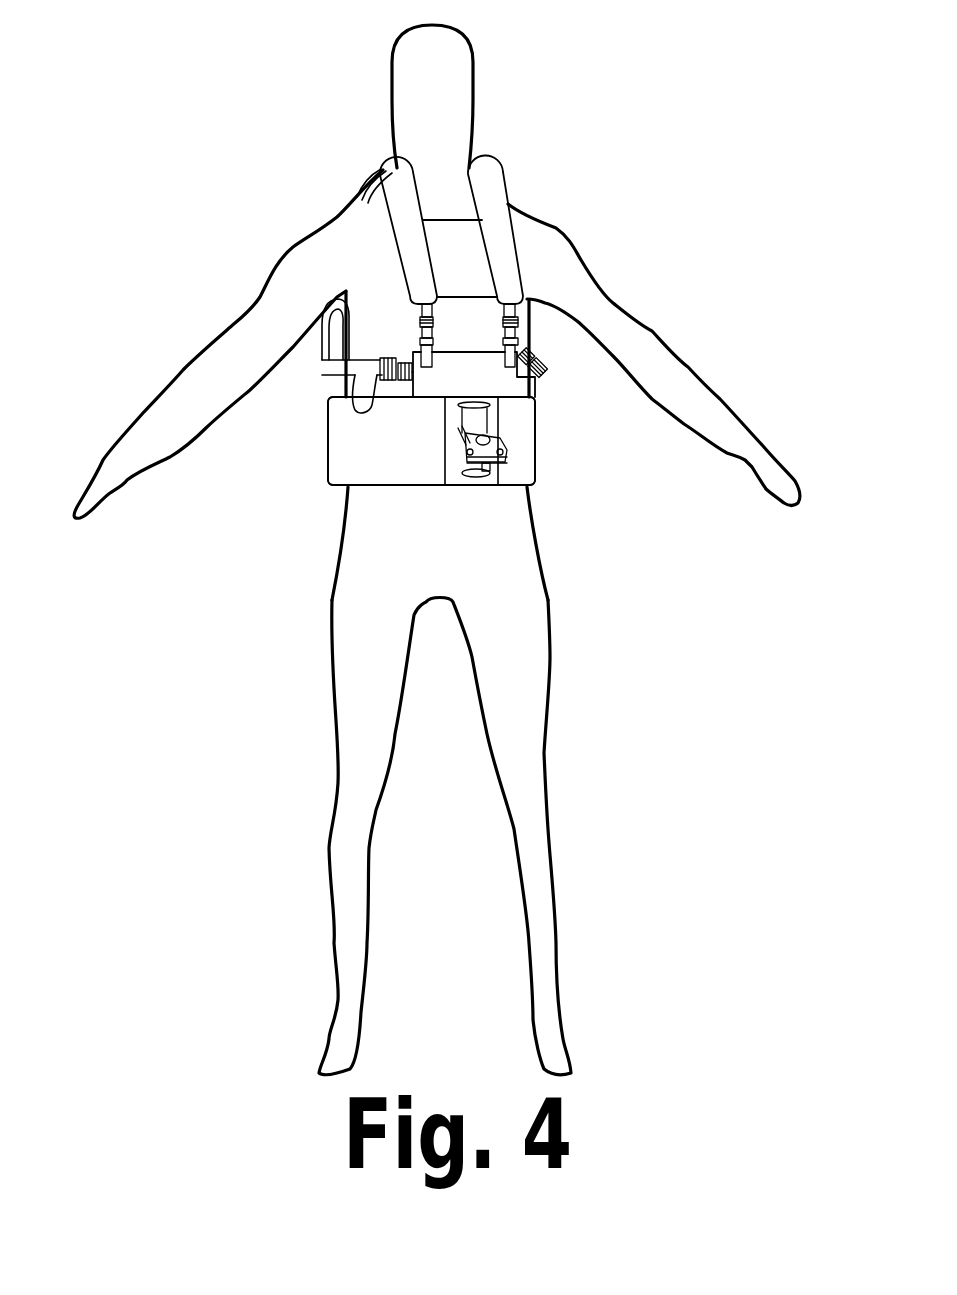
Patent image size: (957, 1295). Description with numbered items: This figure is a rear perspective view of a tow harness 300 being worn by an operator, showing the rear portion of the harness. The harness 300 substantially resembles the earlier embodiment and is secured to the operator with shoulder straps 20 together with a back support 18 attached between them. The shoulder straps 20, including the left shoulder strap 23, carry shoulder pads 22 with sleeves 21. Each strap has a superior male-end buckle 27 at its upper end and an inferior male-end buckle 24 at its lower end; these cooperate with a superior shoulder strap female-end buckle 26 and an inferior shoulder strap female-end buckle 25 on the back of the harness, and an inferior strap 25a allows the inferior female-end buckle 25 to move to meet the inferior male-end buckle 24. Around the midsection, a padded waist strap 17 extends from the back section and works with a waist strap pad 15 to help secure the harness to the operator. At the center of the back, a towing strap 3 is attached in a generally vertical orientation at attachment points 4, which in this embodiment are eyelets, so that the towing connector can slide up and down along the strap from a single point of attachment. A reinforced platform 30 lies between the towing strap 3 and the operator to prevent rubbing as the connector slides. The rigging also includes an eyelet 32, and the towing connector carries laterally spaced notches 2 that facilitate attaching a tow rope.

The harness 300 is at (690, 588).
The shoulder pads 22 is at (357, 195).
The shoulder straps 20 is at (413, 242).
The back support 18 is at (467, 265).
The superior male-end buckle 27 is at (421, 323).
The superior shoulder strap female-end buckle 26 is at (460, 313).
The inferior shoulder strap female-end buckle 25 is at (410, 392).
The inferior strap 25a is at (413, 358).
The padded waist strap 17 is at (385, 485).
The waist strap pad 15 is at (323, 328).
The inferior male-end buckle 24 is at (392, 365).
The left shoulder strap 23 is at (397, 378).
The reinforced platform 30 is at (493, 404).
The eyelet 32 is at (496, 408).
The attachment points 4 is at (505, 450).
The notches 2 is at (505, 458).
The towing strap 3 is at (470, 420).
The sleeves 21 is at (493, 466).